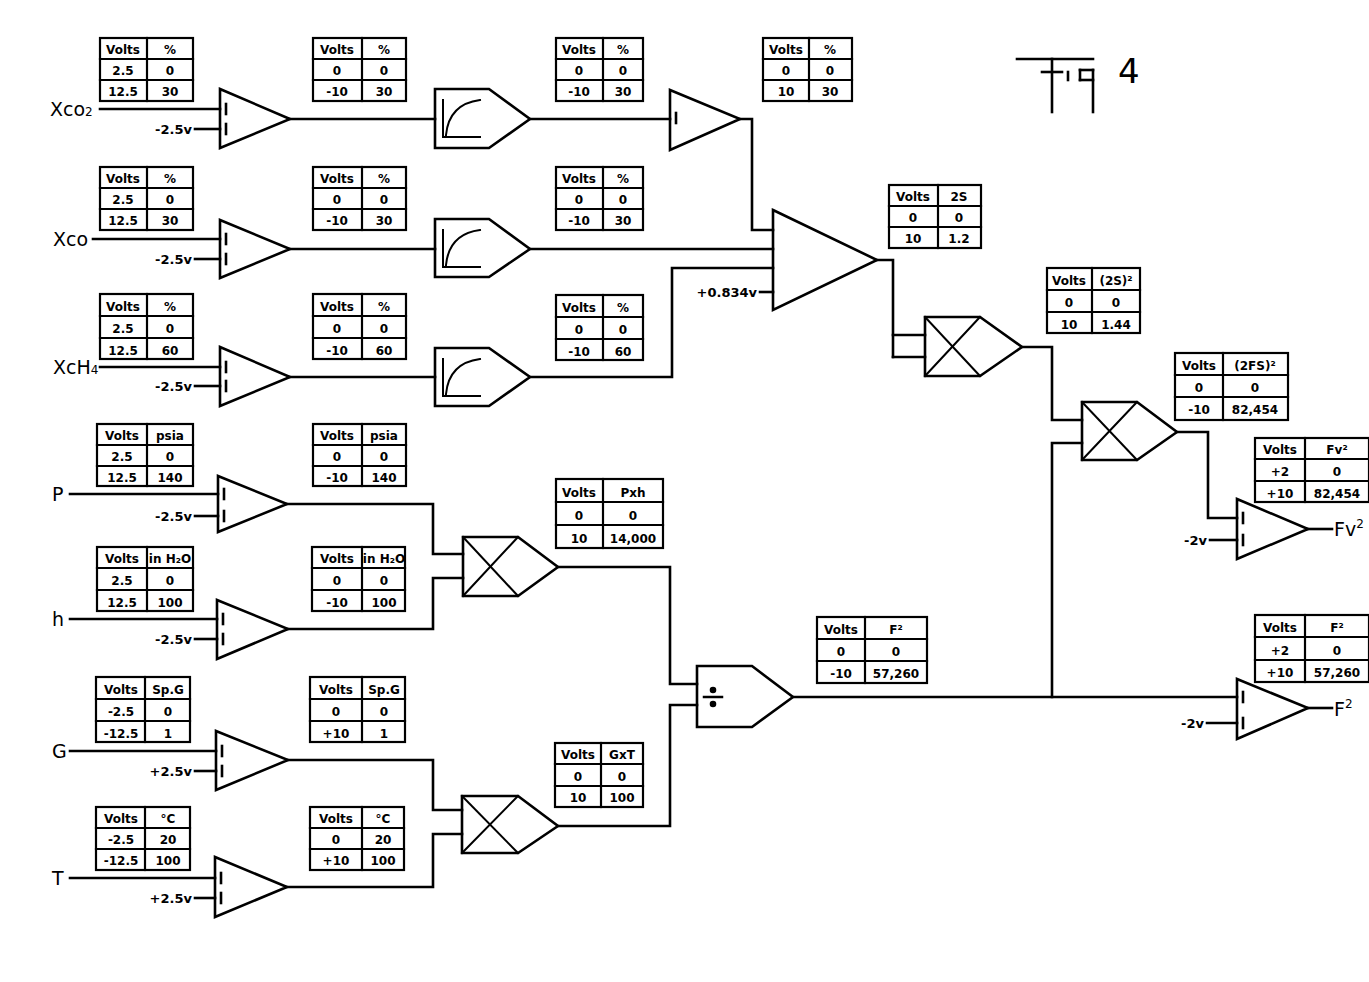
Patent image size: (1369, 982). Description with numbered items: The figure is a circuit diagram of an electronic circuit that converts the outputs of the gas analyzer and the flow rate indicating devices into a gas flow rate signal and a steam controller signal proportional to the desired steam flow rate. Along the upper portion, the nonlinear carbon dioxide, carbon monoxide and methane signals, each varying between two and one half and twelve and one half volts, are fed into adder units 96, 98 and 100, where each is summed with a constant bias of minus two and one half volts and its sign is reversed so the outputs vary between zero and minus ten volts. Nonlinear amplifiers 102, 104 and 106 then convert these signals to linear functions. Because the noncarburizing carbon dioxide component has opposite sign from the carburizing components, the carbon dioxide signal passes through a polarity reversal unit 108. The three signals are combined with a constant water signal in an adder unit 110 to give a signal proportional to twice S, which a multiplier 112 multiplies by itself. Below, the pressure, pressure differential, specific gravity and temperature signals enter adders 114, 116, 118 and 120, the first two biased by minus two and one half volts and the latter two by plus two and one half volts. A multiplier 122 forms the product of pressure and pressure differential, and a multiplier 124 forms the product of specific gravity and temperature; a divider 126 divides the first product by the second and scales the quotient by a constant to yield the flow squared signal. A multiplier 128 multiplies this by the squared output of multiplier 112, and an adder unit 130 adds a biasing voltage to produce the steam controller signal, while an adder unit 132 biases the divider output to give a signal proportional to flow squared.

The adder unit 96 is at (250, 97).
The adder unit 98 is at (246, 223).
The adder unit 100 is at (246, 354).
The nonlinear amplifier 102 is at (485, 89).
The nonlinear amplifier 104 is at (488, 219).
The nonlinear amplifier 106 is at (493, 348).
The polarity reversal unit 108 is at (700, 100).
The adder unit 110 is at (838, 237).
The multiplier 112 is at (978, 317).
The adder 114 is at (250, 483).
The adder 116 is at (252, 609).
The adder 118 is at (250, 737).
The adder 120 is at (248, 864).
The multiplier 122 is at (495, 537).
The multiplier 124 is at (494, 796).
The divider 126 is at (734, 666).
The multiplier 128 is at (1107, 402).
The adder unit 130 is at (1277, 546).
The adder unit 132 is at (1280, 722).